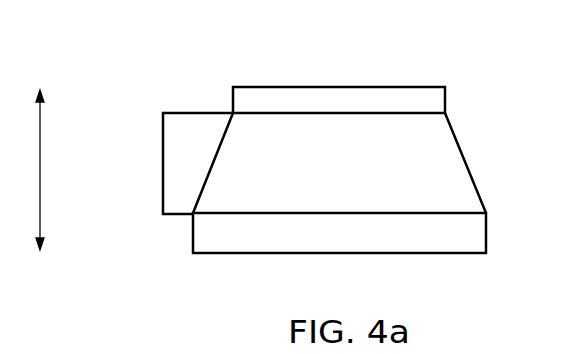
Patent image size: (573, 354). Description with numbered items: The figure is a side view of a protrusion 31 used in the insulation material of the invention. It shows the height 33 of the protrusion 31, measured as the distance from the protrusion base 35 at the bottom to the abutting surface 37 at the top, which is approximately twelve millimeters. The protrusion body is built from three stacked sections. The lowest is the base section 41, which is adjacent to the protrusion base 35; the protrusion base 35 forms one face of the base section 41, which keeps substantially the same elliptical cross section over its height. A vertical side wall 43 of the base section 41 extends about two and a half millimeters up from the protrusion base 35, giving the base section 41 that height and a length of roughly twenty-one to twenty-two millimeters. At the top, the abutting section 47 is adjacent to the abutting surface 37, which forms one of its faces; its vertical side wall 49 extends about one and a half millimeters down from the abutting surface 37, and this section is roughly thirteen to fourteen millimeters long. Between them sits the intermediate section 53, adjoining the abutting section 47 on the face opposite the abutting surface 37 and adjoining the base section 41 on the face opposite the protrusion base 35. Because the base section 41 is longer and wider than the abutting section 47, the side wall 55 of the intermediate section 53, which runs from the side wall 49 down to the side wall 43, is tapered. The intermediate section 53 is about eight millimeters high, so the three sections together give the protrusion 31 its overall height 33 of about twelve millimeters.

The protrusion 31 is at (155, 252).
The height 33 is at (58, 170).
The protrusion base 35 is at (225, 255).
The abutting surface 37 is at (352, 87).
The base section 41 is at (445, 237).
The vertical side wall 43 is at (488, 232).
The abutting section 47 is at (285, 100).
The vertical side wall 49 is at (447, 100).
The intermediate section 53 is at (432, 160).
The side wall 55 is at (210, 160).